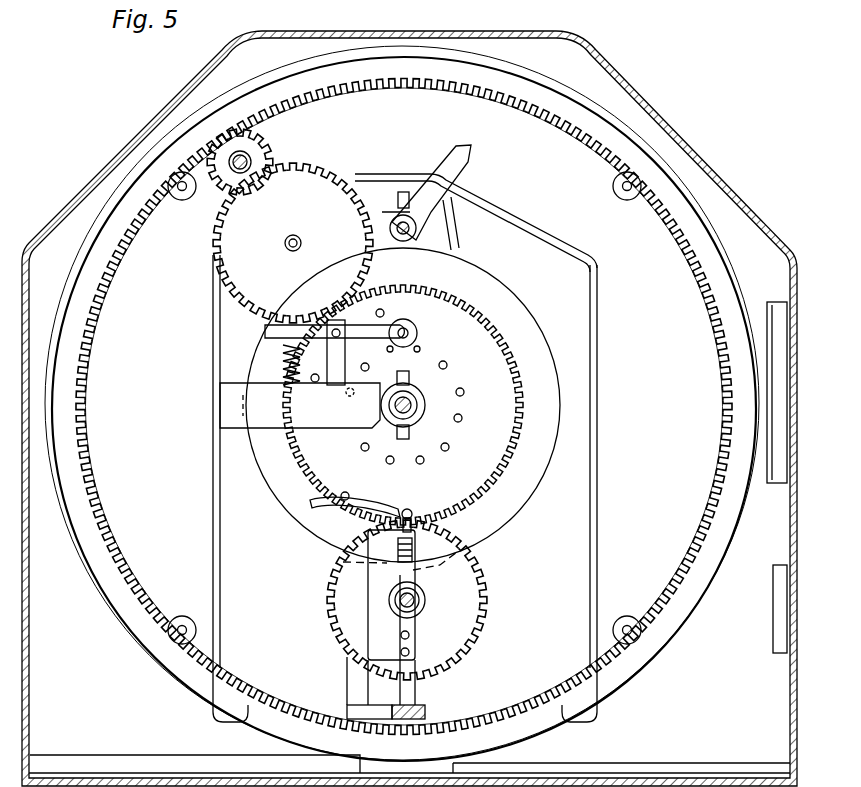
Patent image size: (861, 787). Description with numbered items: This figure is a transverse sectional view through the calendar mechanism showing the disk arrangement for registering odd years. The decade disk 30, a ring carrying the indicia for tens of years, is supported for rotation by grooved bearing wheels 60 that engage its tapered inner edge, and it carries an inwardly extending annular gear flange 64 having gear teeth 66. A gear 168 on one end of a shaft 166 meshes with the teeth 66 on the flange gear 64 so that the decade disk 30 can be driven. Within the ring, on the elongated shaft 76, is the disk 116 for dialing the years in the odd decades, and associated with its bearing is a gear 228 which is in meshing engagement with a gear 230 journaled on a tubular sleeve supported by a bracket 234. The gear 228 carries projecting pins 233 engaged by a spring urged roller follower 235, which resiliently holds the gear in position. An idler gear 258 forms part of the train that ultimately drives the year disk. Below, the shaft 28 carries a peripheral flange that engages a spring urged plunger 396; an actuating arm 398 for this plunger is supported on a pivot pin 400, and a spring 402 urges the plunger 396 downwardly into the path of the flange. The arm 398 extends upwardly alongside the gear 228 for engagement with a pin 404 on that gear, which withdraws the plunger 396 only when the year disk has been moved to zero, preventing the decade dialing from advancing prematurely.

The shaft 28 is at (423, 604).
The decade disk 30 is at (563, 100).
The grooved bearing wheels 60 is at (178, 197).
The annular gear flange 64 is at (573, 128).
The gear teeth 66 is at (545, 112).
The elongated shaft 76 is at (411, 403).
The disk for dialing odd-decade years 116 is at (490, 290).
The shaft 166 is at (236, 172).
The gear 168 is at (264, 158).
The gear 228 is at (490, 350).
The gear 230 is at (465, 620).
The projecting pins 233 is at (461, 417).
The bracket 234 is at (340, 420).
The spring urged roller follower 235 is at (419, 335).
The idler gear 258 is at (318, 184).
The spring urged plunger 396 is at (414, 566).
The actuating arm 398 is at (352, 510).
The pivot pin 400 is at (384, 512).
The spring 402 is at (412, 567).
The pin 404 is at (348, 493).